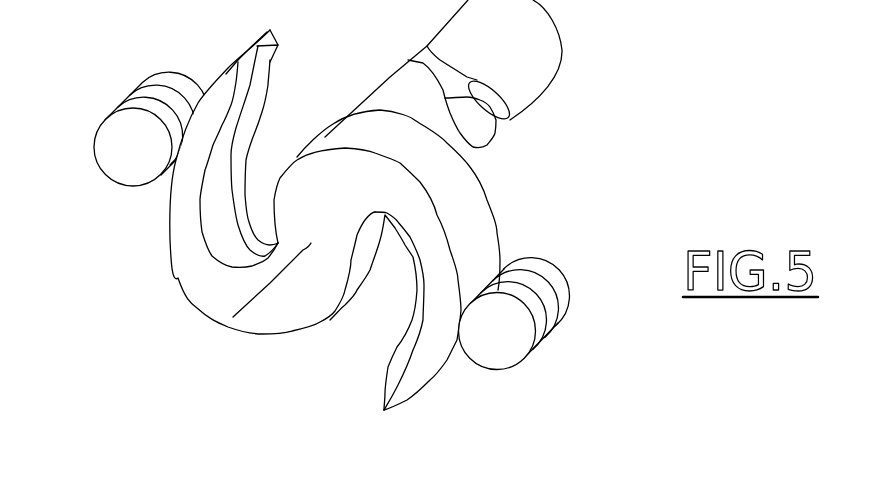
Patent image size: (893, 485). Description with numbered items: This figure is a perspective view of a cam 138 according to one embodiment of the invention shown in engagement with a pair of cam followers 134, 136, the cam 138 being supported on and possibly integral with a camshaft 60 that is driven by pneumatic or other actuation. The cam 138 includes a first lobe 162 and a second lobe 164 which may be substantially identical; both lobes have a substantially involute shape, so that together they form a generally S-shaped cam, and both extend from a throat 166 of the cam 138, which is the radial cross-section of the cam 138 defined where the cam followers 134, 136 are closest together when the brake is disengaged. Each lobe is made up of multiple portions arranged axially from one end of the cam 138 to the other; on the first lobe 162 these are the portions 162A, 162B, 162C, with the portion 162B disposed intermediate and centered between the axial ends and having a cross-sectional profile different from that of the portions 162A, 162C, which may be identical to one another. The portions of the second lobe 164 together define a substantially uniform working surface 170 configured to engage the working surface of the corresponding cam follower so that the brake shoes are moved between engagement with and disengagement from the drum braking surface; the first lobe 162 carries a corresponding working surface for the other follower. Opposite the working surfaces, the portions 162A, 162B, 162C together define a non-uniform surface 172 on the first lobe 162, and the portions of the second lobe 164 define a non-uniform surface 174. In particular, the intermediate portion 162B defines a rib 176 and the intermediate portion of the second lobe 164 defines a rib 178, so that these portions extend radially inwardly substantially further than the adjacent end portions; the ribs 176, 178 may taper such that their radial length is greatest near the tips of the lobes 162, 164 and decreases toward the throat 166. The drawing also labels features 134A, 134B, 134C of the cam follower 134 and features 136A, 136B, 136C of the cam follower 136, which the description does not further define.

The camshaft 60 is at (548, 64).
The cam follower 134 is at (133, 107).
The roller end face 134A is at (112, 150).
The roller groove 134B is at (133, 87).
The roller flange 134C is at (152, 74).
The cam follower 136 is at (559, 304).
The roller end face 136A is at (545, 324).
The roller groove 136B is at (555, 305).
The roller flange 136C is at (563, 283).
The cam 138 is at (355, 205).
The first lobe 162 is at (241, 174).
The portion of first lobe 162A is at (227, 80).
The portion of first lobe 162B is at (272, 52).
The portion of first lobe 162C is at (276, 37).
The second lobe 164 is at (410, 311).
The throat 166 is at (233, 317).
The working surface 170 is at (477, 207).
The non-uniform surface 172 is at (204, 192).
The non-uniform surface 174 is at (420, 317).
The rib 176 is at (238, 133).
The rib 178 is at (400, 343).